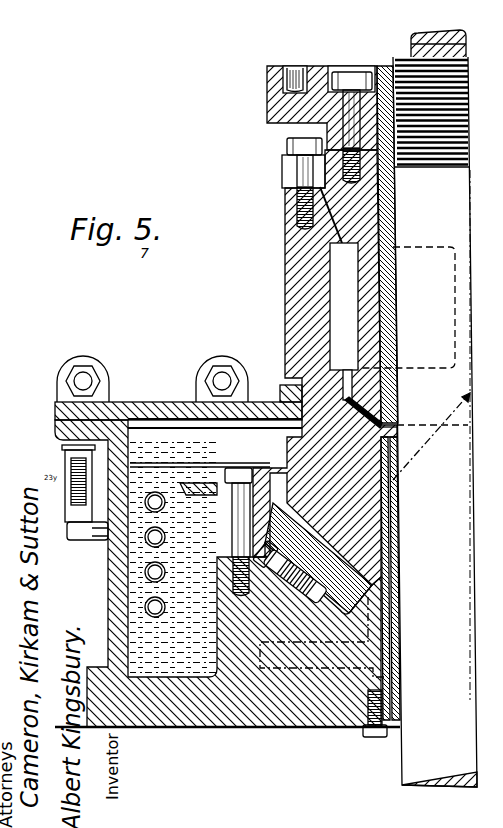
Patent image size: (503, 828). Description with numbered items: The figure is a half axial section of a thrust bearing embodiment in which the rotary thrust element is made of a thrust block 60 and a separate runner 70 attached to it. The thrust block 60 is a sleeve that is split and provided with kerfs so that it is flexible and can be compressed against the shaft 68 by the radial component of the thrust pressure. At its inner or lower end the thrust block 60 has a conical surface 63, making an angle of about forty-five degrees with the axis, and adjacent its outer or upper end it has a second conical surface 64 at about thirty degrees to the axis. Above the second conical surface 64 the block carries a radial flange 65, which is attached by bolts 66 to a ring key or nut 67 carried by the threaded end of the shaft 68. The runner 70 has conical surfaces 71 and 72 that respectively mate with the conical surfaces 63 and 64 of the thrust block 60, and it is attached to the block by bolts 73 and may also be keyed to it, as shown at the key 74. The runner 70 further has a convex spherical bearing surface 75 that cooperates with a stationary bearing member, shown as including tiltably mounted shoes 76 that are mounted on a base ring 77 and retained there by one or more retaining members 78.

The thrust block 60 is at (372, 227).
The conical surface 63 is at (367, 417).
The second conical surface 64 is at (360, 185).
The radial flange 65 is at (287, 177).
The bolts 66 is at (350, 107).
The nut 67 is at (276, 82).
The shaft 68 is at (461, 472).
The runner 70 is at (300, 305).
The conical surface 71 is at (348, 407).
The conical surface 72 is at (333, 206).
The bolts 73 is at (305, 166).
The key 74 is at (340, 288).
The convex spherical bearing surface 75 is at (313, 520).
The tiltably mounted shoes 76 is at (388, 550).
The base ring 77 is at (243, 668).
The retaining members 78 is at (222, 522).